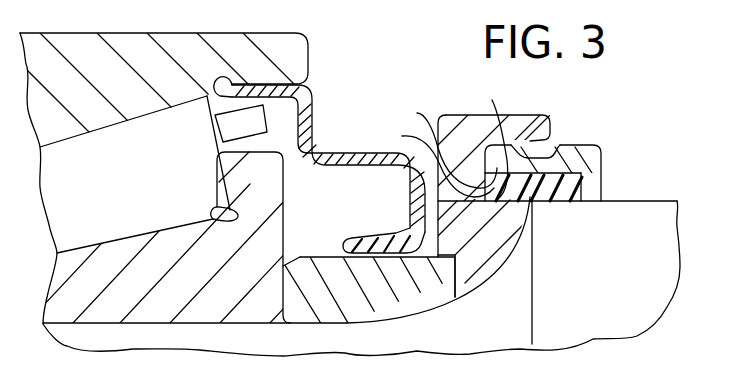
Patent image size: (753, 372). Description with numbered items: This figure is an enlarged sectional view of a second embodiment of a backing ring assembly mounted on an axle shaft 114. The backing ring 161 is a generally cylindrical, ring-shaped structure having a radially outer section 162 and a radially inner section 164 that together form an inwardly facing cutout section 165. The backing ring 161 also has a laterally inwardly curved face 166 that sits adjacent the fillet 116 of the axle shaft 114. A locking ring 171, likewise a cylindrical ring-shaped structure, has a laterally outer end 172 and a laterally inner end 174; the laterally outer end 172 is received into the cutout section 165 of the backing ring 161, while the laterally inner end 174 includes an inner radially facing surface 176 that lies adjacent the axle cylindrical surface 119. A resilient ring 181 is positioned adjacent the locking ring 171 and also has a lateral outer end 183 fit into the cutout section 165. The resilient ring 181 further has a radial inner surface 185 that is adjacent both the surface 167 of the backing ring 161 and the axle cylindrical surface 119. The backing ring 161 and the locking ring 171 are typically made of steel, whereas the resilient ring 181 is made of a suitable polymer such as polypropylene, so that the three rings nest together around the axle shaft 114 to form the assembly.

The axle shaft 114 is at (654, 269).
The fillet 116 is at (503, 262).
The axle cylindrical surface 119 is at (672, 200).
The backing ring 161 is at (453, 114).
The radially outer section 162 is at (517, 113).
The radially inner section 164 is at (531, 238).
The cutout section 165 is at (559, 146).
The laterally inwardly curved face 166 is at (497, 278).
The surface 167 is at (490, 139).
The locking ring 171 is at (601, 152).
The laterally outer end 172 is at (438, 140).
The laterally inner end 174 is at (605, 162).
The inner radially facing surface 176 is at (607, 185).
The resilient ring 181 is at (572, 200).
The lateral outer end 183 is at (429, 159).
The radial inner surface 185 is at (521, 214).